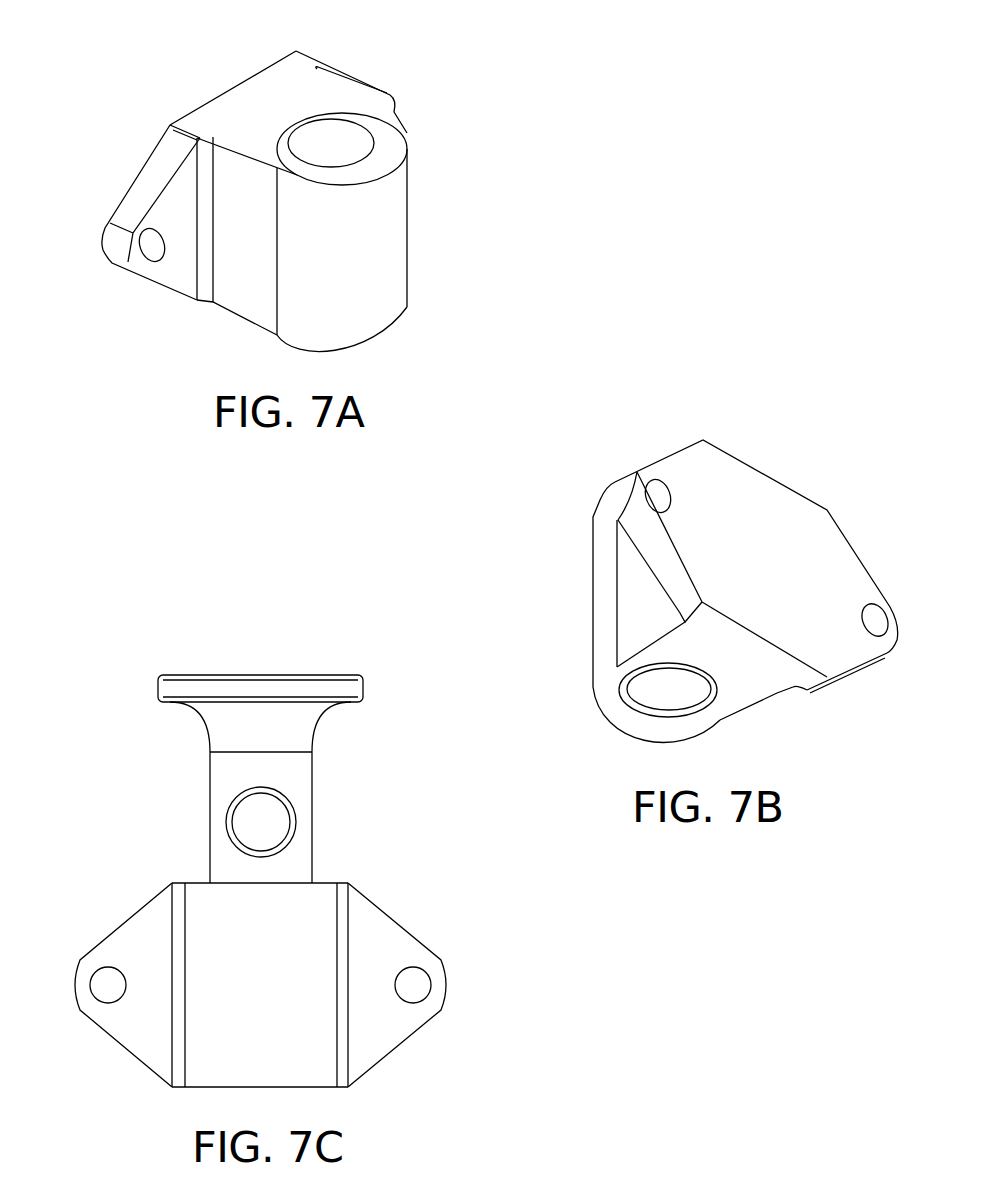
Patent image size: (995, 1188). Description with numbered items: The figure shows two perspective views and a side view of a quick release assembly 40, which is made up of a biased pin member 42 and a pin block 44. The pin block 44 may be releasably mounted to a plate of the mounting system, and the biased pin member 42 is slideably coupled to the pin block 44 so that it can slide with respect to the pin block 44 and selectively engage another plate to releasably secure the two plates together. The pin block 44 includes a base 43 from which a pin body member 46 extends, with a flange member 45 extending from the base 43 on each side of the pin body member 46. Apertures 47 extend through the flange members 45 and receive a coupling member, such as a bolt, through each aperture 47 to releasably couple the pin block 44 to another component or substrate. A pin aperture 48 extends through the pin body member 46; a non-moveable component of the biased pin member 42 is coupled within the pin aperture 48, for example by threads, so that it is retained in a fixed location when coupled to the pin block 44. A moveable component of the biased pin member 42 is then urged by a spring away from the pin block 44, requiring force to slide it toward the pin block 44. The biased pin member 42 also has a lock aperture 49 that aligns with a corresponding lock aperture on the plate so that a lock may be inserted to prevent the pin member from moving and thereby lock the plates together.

In FIG. 7C, the quick release assembly 40 is at (135, 630).
In FIG. 7C, the biased pin member 42 is at (260, 690).
In FIG. 7A, the base 43 is at (214, 99).
In FIG. 7B, the base 43 is at (780, 512).
In FIG. 7A, the pin block 44 is at (440, 103).
In FIG. 7B, the pin block 44 is at (652, 428).
In FIG. 7C, the pin block 44 is at (165, 833).
In FIG. 7A, the flange members 45 is at (178, 215).
In FIG. 7C, the flange members 45 is at (370, 928).
In FIG. 7A, the pin body member 46 is at (387, 237).
In FIG. 7B, the pin body member 46 is at (602, 597).
In FIG. 7C, the pin body member 46 is at (222, 975).
In FIG. 7A, the apertures 47 is at (152, 243).
In FIG. 7B, the apertures 47 is at (875, 620).
In FIG. 7C, the apertures 47 is at (413, 985).
In FIG. 7A, the pin aperture 48 is at (327, 143).
In FIG. 7B, the pin aperture 48 is at (670, 693).
In FIG. 7C, the lock aperture 49 is at (262, 822).